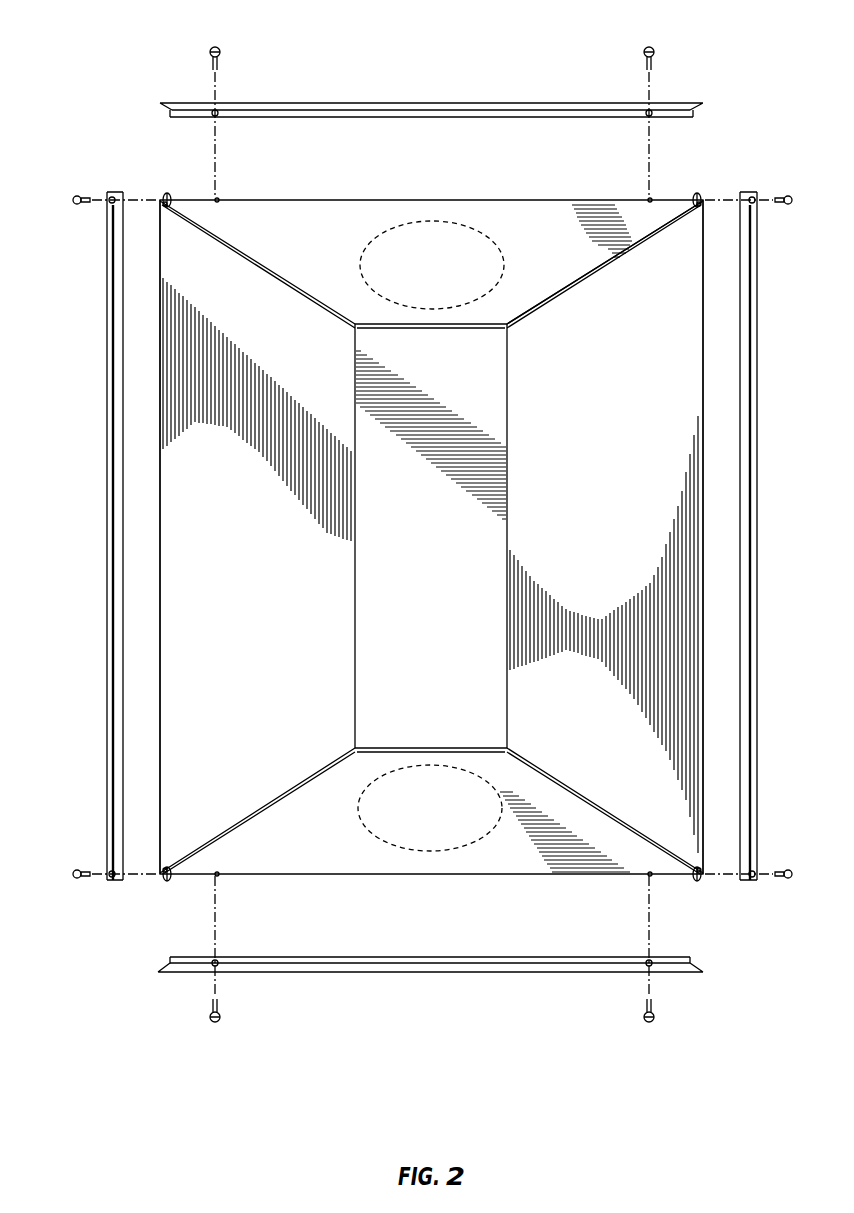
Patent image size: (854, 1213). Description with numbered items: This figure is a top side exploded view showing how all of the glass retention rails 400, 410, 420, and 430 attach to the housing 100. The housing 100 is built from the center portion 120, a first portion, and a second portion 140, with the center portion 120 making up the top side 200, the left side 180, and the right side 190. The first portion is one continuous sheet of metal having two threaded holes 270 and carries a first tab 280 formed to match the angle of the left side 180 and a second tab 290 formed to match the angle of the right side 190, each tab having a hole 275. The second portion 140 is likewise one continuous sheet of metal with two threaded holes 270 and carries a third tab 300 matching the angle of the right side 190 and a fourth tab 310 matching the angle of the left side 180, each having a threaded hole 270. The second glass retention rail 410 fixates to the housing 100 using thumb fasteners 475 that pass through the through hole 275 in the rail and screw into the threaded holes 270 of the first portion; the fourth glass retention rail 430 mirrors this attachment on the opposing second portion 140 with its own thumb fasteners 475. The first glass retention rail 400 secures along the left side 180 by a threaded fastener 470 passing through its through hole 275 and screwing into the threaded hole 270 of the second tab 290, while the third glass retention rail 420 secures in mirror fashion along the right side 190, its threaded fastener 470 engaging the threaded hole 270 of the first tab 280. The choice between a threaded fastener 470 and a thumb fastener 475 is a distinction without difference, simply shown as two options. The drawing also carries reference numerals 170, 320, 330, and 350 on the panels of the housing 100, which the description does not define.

The housing 100 is at (431, 198).
The center portion 120 is at (308, 708).
The second portion 140 is at (552, 275).
The opening region 170 is at (445, 278).
The left side 180 is at (245, 593).
The right side 190 is at (583, 563).
The top side 200 is at (425, 593).
The threaded hole 270 is at (218, 199).
The through hole 275 is at (213, 116).
The first tab 280 is at (195, 908).
The second tab 290 is at (725, 913).
The third tab 300 is at (718, 188).
The fourth tab 310 is at (193, 188).
The bottom panel 320 is at (395, 868).
The top panel 330 is at (392, 228).
The shaded graphic region 350 is at (556, 196).
The first glass retention rail 400 is at (106, 527).
The second glass retention rail 410 is at (450, 974).
The third glass retention rail 420 is at (760, 500).
The fourth glass retention rail 430 is at (455, 101).
The threaded fastener 470 is at (73, 197).
The thumb fastener 475 is at (219, 46).